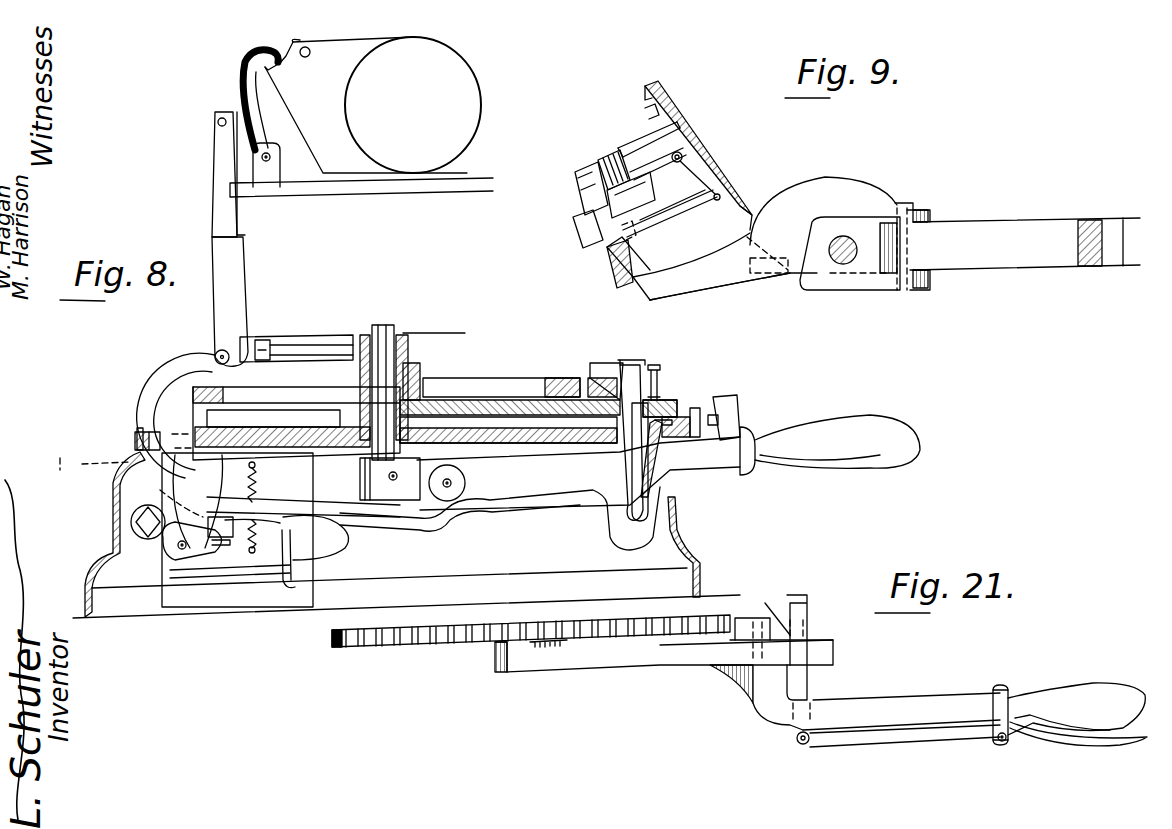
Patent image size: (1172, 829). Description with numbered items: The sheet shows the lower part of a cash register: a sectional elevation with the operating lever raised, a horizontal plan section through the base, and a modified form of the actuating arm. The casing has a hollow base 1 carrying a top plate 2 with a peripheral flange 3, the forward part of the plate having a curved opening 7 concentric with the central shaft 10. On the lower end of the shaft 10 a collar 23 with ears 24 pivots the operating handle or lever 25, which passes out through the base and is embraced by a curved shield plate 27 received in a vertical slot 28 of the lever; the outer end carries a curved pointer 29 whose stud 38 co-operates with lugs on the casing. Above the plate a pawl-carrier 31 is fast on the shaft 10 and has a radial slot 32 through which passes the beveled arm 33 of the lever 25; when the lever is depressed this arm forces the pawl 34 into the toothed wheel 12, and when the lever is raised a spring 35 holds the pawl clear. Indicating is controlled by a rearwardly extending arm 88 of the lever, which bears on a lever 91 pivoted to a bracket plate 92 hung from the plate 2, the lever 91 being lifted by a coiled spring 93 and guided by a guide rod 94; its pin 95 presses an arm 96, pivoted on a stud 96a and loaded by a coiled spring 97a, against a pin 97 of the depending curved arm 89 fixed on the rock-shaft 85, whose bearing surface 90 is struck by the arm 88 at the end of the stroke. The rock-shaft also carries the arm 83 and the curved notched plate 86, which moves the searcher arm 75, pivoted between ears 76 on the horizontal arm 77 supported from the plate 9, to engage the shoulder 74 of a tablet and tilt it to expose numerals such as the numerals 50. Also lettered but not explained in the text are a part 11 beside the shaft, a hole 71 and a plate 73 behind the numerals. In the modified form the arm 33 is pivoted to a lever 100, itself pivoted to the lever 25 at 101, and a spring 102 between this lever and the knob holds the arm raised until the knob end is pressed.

In FIG. 8, the hollow base 1 is at (113, 510).
In FIG. 8, the top plate 2 is at (290, 438).
In FIG. 8, the peripheral flange 3 is at (136, 434).
In FIG. 8, the curved opening 7 is at (672, 402).
In FIG. 8, the plate 9 is at (82, 464).
In FIG. 8, the central shaft 10 is at (383, 330).
In FIG. 9, the central shaft 10 is at (845, 250).
In FIG. 8, the post bracket 11 is at (418, 376).
In FIG. 8, the toothed wheel 12 is at (546, 378).
In FIG. 21, the toothed wheel 12 is at (408, 647).
In FIG. 8, the collar 23 is at (362, 482).
In FIG. 9, the collar 23 is at (815, 234).
In FIG. 8, the ears 24 is at (455, 482).
In FIG. 9, the ears 24 is at (925, 215).
In FIG. 8, the operating handle or lever 25 is at (668, 462).
In FIG. 9, the operating handle or lever 25 is at (1025, 226).
In FIG. 21, the operating handle or lever 25 is at (637, 660).
In FIG. 8, the curved shield plate 27 is at (660, 460).
In FIG. 8, the vertical slot 28 is at (636, 505).
In FIG. 8, the pointer 29 is at (730, 408).
In FIG. 8, the pawl-carrier 31 is at (486, 404).
In FIG. 8, the narrow slot 32 is at (662, 400).
In FIG. 8, the beveled arm 33 is at (631, 440).
In FIG. 21, the beveled arm 33 is at (808, 676).
In FIG. 8, the pawl 34 is at (597, 375).
In FIG. 21, the pawl 34 is at (745, 638).
In FIG. 8, the spring 35 is at (651, 365).
In FIG. 8, the stud 38 is at (711, 428).
In FIG. 8, the indicator numerals 50 is at (413, 105).
In FIG. 8, the pivot hole 71 is at (306, 46).
In FIG. 8, the indicator plate 73 is at (360, 42).
In FIG. 8, the shoulder 74 is at (283, 63).
In FIG. 8, the searcher arm 75 is at (258, 133).
In FIG. 8, the ears 76 is at (282, 170).
In FIG. 8, the horizontal arm 77 is at (342, 204).
In FIG. 8, the arm 83 is at (240, 288).
In FIG. 8, the rock-shaft 85 is at (312, 345).
In FIG. 8, the curved plate 86 is at (235, 112).
In FIG. 8, the rearwardly extending arm 88 is at (415, 518).
In FIG. 9, the rearwardly extending arm 88 is at (765, 238).
In FIG. 8, the depending curved arm 89 is at (180, 385).
In FIG. 9, the depending curved arm 89 is at (600, 255).
In FIG. 8, the bearing surface 90 is at (195, 501).
In FIG. 8, the lever 91 is at (338, 543).
In FIG. 8, the bracket plate 92 is at (237, 530).
In FIG. 8, the coiled spring 93 is at (256, 480).
In FIG. 8, the guide rod 94 is at (282, 578).
In FIG. 8, the pin 95 is at (258, 528).
In FIG. 9, the pin 95 is at (672, 196).
In FIG. 8, the arm 96 is at (232, 540).
In FIG. 9, the arm 96 is at (650, 232).
In FIG. 9, the stud 96a is at (648, 130).
In FIG. 8, the pin 97 is at (210, 548).
In FIG. 9, the pin 97 is at (583, 240).
In FIG. 9, the coiled spring 97a is at (603, 163).
In FIG. 21, the lever 100 is at (925, 740).
In FIG. 21, the pivot 101 is at (1000, 740).
In FIG. 21, the spring 102 is at (1075, 732).